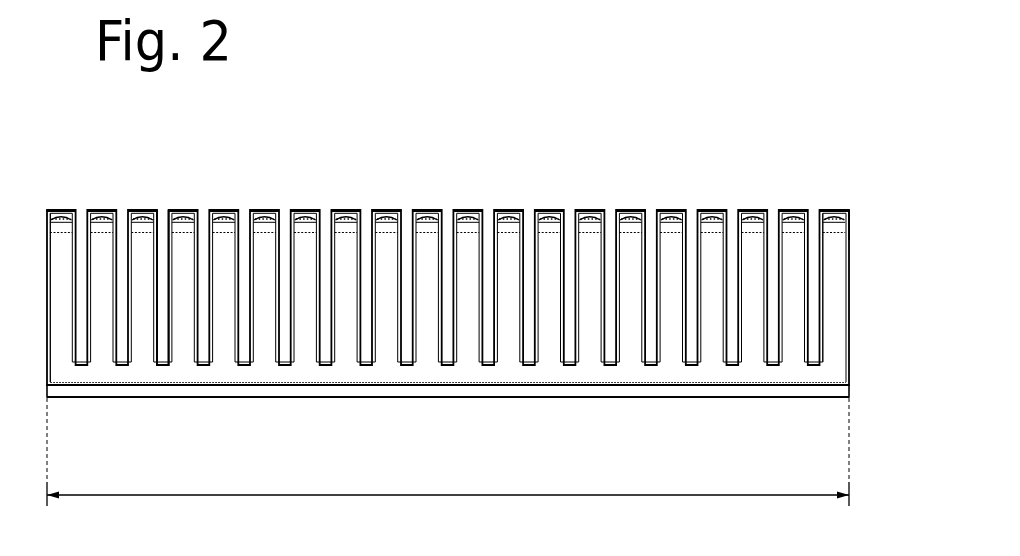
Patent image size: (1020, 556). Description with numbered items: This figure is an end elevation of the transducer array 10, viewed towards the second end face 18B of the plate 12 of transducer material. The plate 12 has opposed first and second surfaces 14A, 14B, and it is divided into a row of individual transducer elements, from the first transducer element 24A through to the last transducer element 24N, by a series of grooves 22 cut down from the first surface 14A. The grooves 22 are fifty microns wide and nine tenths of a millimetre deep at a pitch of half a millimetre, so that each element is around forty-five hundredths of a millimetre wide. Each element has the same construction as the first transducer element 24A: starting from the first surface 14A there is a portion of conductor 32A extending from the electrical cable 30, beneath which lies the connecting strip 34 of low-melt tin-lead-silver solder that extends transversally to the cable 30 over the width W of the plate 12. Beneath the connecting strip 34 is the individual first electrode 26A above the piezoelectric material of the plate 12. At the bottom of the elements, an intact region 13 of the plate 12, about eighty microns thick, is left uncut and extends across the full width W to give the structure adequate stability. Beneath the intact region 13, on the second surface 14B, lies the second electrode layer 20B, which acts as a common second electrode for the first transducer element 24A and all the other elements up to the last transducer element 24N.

The transducer array 10 is at (707, 114).
The plate 12 is at (852, 289).
The intact region 13 is at (852, 370).
The first surface 14A is at (835, 240).
The second surface 14B is at (275, 398).
The second end face 18B is at (141, 368).
The second electrode layer 20B is at (852, 392).
The grooves 22 is at (123, 212).
The first transducer element 24A is at (852, 317).
The last transducer element 24N is at (45, 287).
The individual first electrode 26A is at (847, 225).
The electrical cable 30 is at (700, 208).
The conductor 32A is at (837, 218).
The connecting strip 34 is at (847, 222).
The width W is at (448, 495).